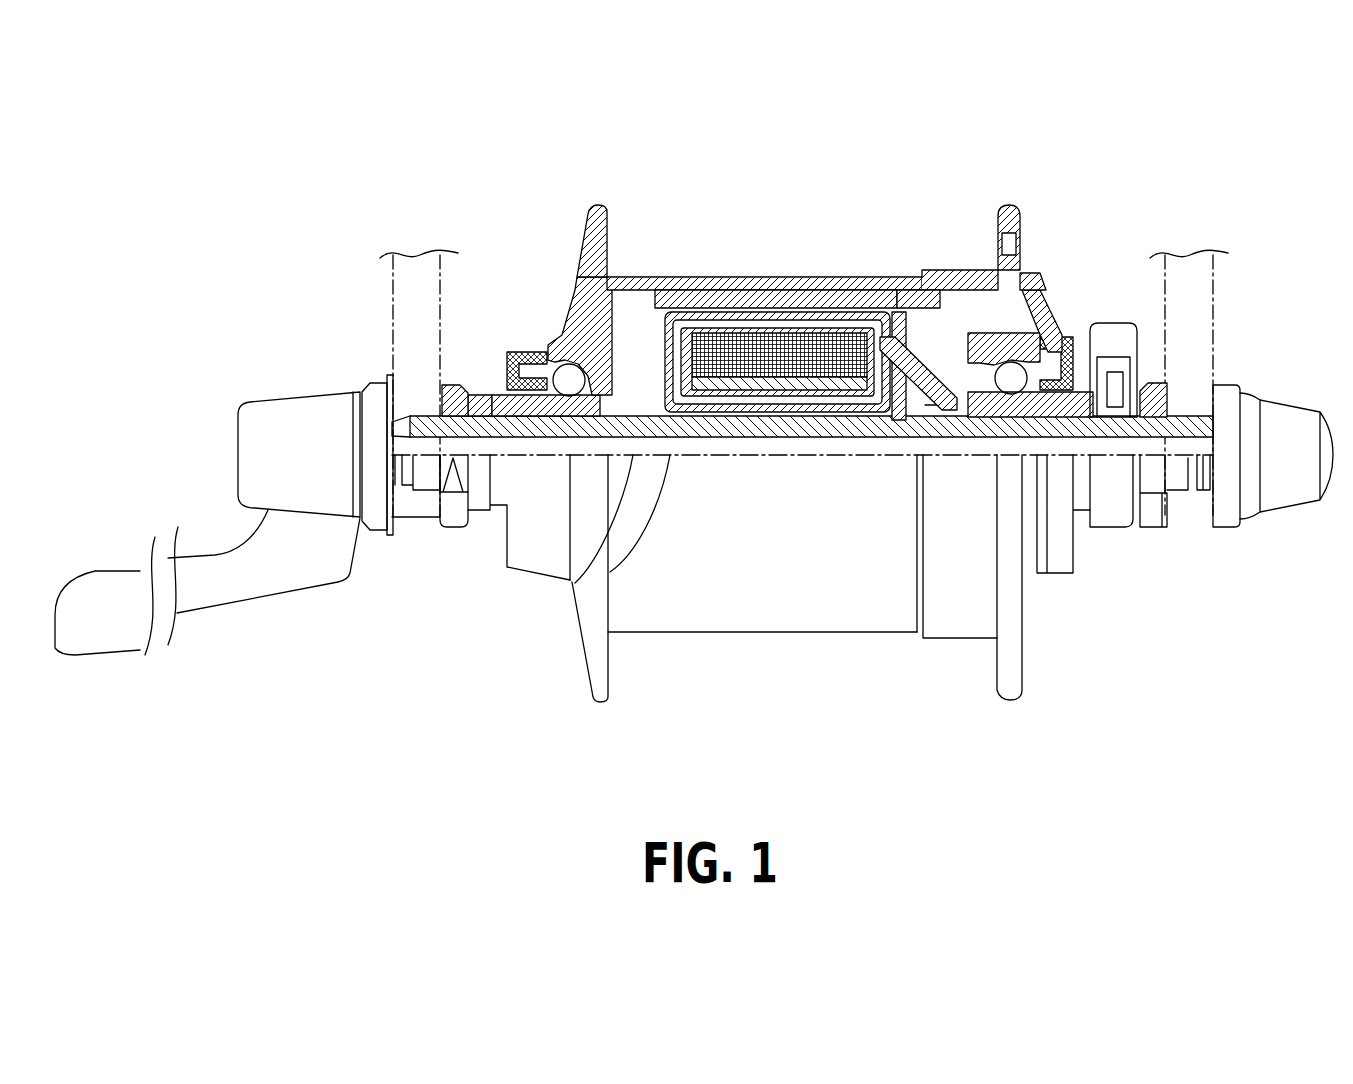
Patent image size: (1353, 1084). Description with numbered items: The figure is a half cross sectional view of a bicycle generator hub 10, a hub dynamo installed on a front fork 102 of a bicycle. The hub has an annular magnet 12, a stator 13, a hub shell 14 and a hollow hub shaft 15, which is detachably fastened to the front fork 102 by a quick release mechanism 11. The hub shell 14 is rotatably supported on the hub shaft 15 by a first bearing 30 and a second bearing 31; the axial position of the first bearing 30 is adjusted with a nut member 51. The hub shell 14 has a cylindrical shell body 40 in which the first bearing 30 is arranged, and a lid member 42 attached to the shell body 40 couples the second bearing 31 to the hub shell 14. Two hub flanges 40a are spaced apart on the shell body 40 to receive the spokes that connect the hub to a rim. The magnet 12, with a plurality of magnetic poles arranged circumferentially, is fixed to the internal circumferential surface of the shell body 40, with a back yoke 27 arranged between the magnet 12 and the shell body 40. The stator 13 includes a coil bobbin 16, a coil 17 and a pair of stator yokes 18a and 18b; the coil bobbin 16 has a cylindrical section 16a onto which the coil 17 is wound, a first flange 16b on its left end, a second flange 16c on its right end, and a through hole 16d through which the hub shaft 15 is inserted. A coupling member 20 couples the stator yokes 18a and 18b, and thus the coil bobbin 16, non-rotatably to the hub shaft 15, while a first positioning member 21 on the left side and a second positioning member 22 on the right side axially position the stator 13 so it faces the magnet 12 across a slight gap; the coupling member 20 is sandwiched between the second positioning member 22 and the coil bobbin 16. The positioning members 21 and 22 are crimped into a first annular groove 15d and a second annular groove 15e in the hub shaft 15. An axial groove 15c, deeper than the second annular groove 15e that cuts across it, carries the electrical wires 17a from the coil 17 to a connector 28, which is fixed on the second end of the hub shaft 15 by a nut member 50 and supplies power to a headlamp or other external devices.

The bicycle generator hub 10 is at (798, 220).
The quick release mechanism 11 is at (343, 415).
The annular magnet 12 is at (712, 330).
The stator 13 is at (822, 300).
The hub shell 14 is at (900, 262).
The hub shaft 15 is at (586, 358).
The axial groove 15c is at (1052, 340).
The first annular groove 15d is at (648, 450).
The second annular groove 15e is at (925, 400).
The coil bobbin 16 is at (660, 333).
The cylindrical section 16a is at (823, 392).
The first flange 16b is at (640, 530).
The second flange 16c is at (890, 395).
The through hole 16d is at (768, 400).
The coil 17 is at (765, 313).
The electrical wire 17a is at (1022, 285).
The stator yoke 18a is at (598, 350).
The stator yoke 18b is at (943, 280).
The coupling member 20 is at (877, 330).
The first positioning member 21 is at (618, 407).
The second positioning member 22 is at (1040, 316).
The back yoke 27 is at (793, 300).
The connector 28 is at (1112, 517).
The first bearing 30 is at (515, 368).
The second bearing 31 is at (1070, 352).
The shell body 40 is at (747, 275).
The hub flange 40a is at (598, 692).
The lid member 42 is at (1040, 332).
The nut member 50 is at (1153, 512).
The nut member 51 is at (457, 515).
The front fork 102 is at (1215, 300).